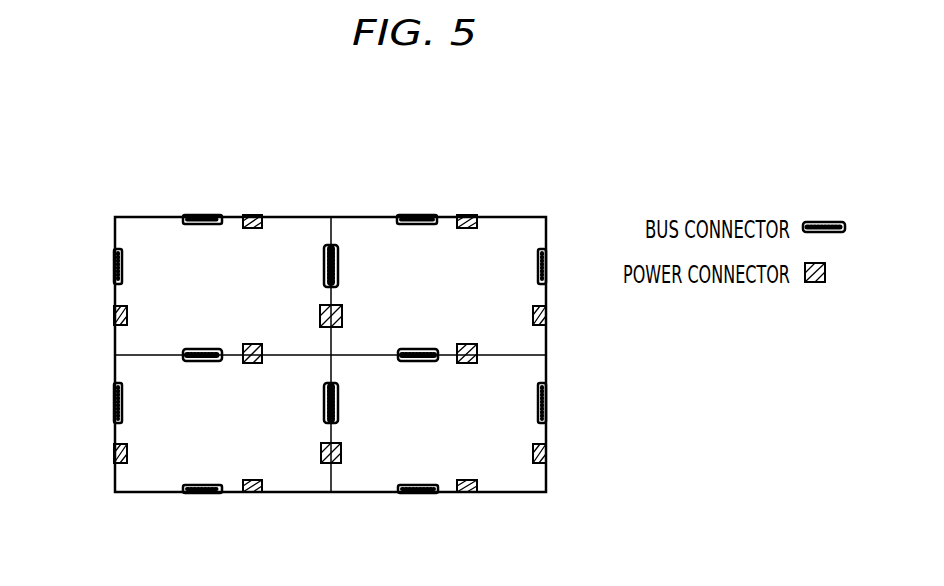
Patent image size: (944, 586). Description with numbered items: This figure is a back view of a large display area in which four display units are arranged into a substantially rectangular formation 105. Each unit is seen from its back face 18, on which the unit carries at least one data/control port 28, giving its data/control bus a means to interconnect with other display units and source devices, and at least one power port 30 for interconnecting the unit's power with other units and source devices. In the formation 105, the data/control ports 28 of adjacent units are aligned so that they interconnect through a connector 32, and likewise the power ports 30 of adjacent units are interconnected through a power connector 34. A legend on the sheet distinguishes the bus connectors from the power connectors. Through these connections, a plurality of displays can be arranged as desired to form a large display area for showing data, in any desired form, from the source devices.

The rectangular formation 105 is at (581, 150).
The back face 18 is at (137, 228).
The data/control port 28 is at (202, 215).
The power port 30 is at (249, 215).
The connector 32 is at (200, 347).
The power connector 34 is at (250, 343).